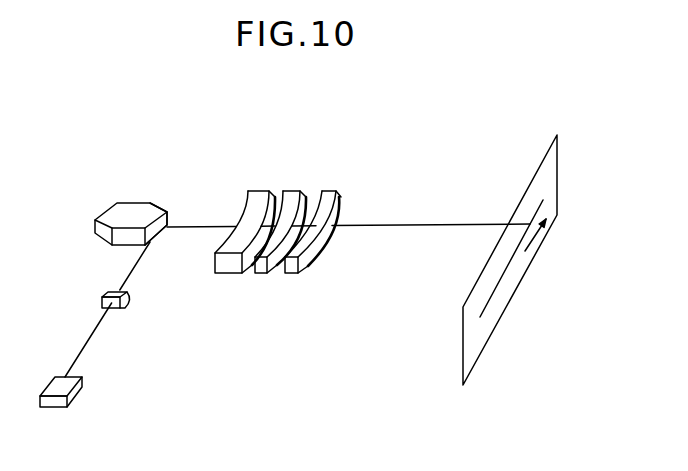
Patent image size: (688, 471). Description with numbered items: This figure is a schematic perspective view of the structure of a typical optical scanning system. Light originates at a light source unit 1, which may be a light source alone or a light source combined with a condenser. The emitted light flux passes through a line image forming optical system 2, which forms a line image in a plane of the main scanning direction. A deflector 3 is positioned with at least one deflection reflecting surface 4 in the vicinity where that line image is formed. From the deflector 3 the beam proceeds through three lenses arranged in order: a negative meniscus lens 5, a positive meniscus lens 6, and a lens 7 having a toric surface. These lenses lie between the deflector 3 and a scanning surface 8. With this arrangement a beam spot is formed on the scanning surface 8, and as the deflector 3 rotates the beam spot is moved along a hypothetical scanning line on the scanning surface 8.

The light source unit 1 is at (80, 385).
The line image forming optical system 2 is at (128, 302).
The deflector 3 is at (112, 212).
The deflection reflecting surface 4 is at (162, 213).
The negative meniscus lens 5 is at (261, 193).
The positive meniscus lens 6 is at (296, 193).
The lens having a toric surface 7 is at (335, 193).
The scanning surface 8 is at (533, 192).